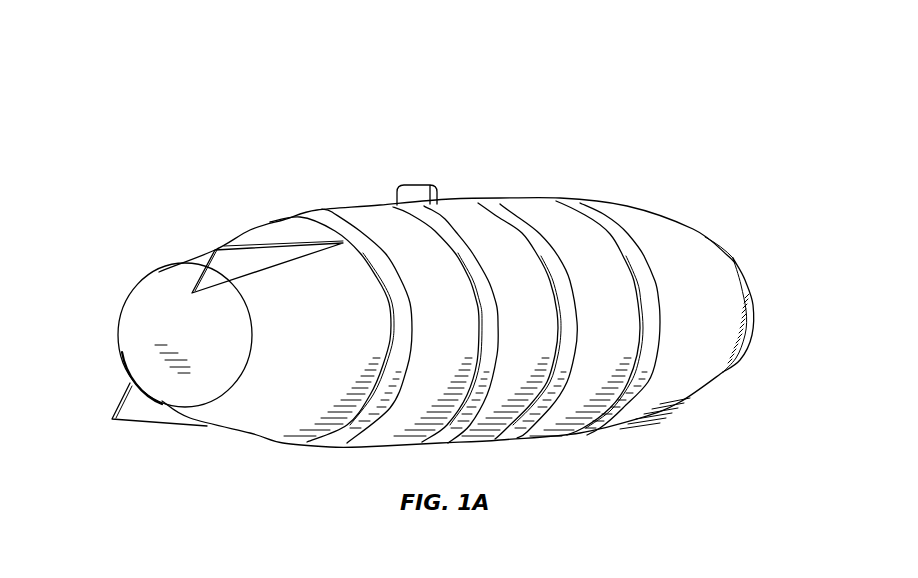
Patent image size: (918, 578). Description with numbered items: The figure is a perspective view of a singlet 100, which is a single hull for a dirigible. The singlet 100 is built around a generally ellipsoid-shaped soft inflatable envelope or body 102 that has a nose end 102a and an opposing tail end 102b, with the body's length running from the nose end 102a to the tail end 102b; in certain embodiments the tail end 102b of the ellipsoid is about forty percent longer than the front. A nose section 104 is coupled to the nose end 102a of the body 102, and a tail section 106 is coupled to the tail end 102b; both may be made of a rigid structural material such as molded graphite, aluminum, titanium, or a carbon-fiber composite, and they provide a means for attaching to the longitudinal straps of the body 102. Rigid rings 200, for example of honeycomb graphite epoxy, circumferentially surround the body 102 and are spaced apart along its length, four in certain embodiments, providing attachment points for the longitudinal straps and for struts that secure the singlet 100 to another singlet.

The singlet 100 is at (162, 147).
The body 102 is at (538, 212).
The nose end 102a is at (750, 293).
The tail end 102b is at (118, 329).
The nose section 104 is at (733, 261).
The tail section 106 is at (158, 297).
The rings 200 is at (487, 203).